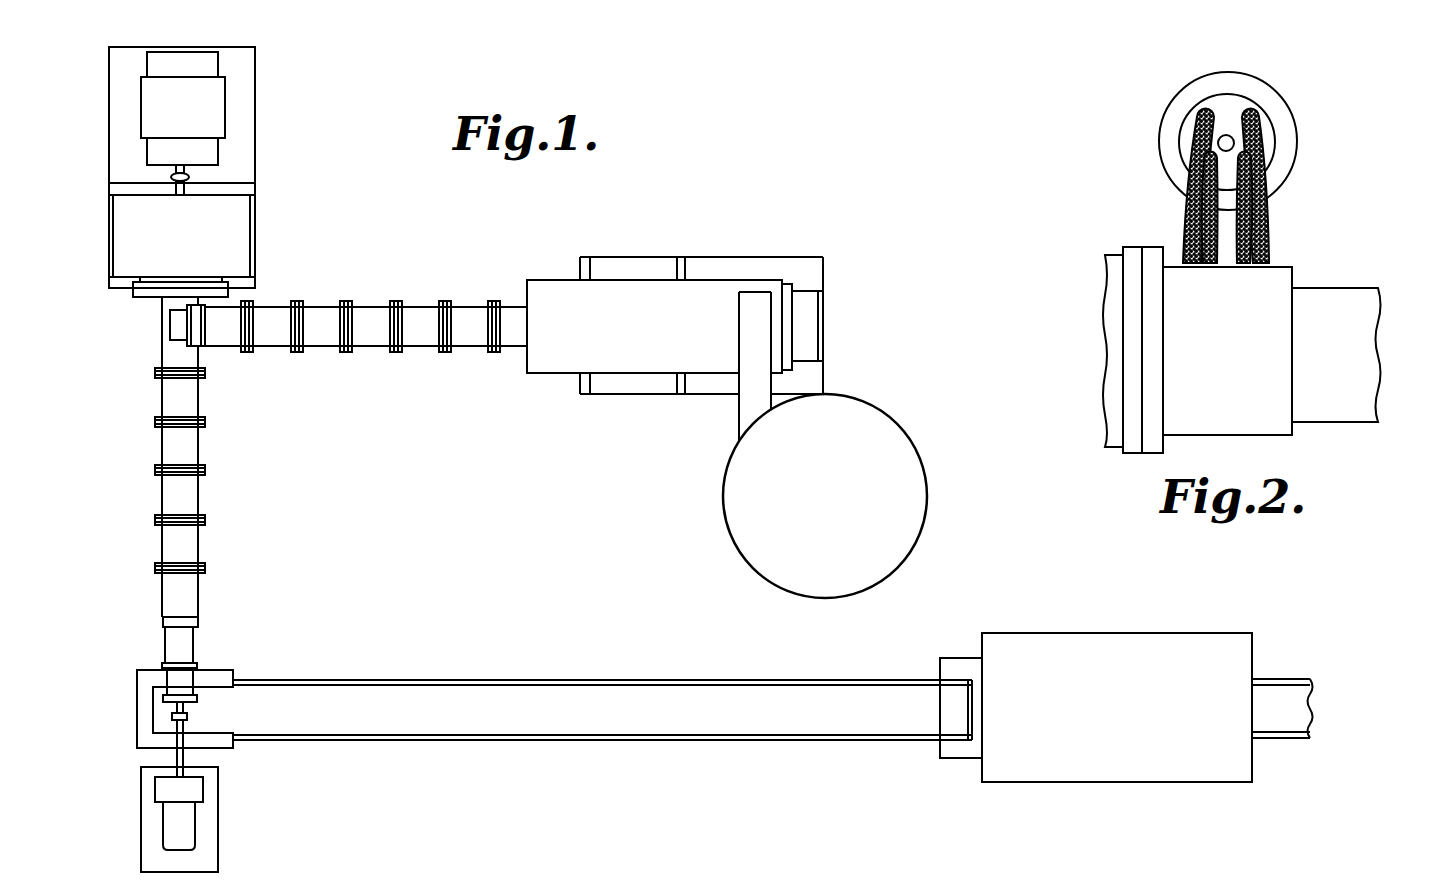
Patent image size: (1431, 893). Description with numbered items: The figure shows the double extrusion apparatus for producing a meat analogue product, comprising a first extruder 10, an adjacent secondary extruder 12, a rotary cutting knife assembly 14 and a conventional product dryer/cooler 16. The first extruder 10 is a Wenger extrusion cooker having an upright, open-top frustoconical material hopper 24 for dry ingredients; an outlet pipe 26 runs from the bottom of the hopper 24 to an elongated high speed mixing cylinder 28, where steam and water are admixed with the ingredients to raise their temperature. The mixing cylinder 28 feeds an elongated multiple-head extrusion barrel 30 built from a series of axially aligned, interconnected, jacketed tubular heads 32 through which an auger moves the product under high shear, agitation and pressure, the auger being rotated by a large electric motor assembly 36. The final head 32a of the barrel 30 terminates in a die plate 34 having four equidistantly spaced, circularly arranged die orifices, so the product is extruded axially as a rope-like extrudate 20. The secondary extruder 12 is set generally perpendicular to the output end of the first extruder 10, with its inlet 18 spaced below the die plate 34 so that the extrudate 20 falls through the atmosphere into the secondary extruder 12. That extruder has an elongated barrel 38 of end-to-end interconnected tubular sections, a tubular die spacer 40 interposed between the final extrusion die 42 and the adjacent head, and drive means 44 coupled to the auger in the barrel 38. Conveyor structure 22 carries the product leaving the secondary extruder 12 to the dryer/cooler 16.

In FIG. 1, the first extruder 10 is at (712, 248).
In FIG. 2, the first extruder 10 is at (1302, 99).
In FIG. 1, the secondary extruder 12 is at (250, 525).
In FIG. 2, the secondary extruder 12 is at (1337, 280).
In FIG. 1, the rotary cutting knife assembly 14 is at (130, 775).
In FIG. 1, the product dryer/cooler 16 is at (1265, 651).
In FIG. 1, the inlet 18 is at (168, 323).
In FIG. 2, the inlet 18 is at (1277, 267).
In FIG. 2, the rope-like extrudate 20 is at (1192, 213).
In FIG. 1, the conveyor structure 22 is at (562, 675).
In FIG. 1, the material hopper 24 is at (927, 483).
In FIG. 1, the outlet pipe 26 is at (748, 408).
In FIG. 1, the mixing cylinder 28 is at (654, 326).
In FIG. 1, the extrusion barrel 30 is at (385, 288).
In FIG. 1, the tubular heads 32 is at (412, 338).
In FIG. 1, the final head 32a is at (225, 342).
In FIG. 2, the die plate 34 is at (1217, 103).
In FIG. 1, the electric motor assembly 36 is at (812, 302).
In FIG. 1, the barrel 38 is at (152, 497).
In FIG. 1, the die spacer 40 is at (170, 680).
In FIG. 1, the final extrusion die 42 is at (188, 707).
In FIG. 1, the drive means 44 is at (236, 106).